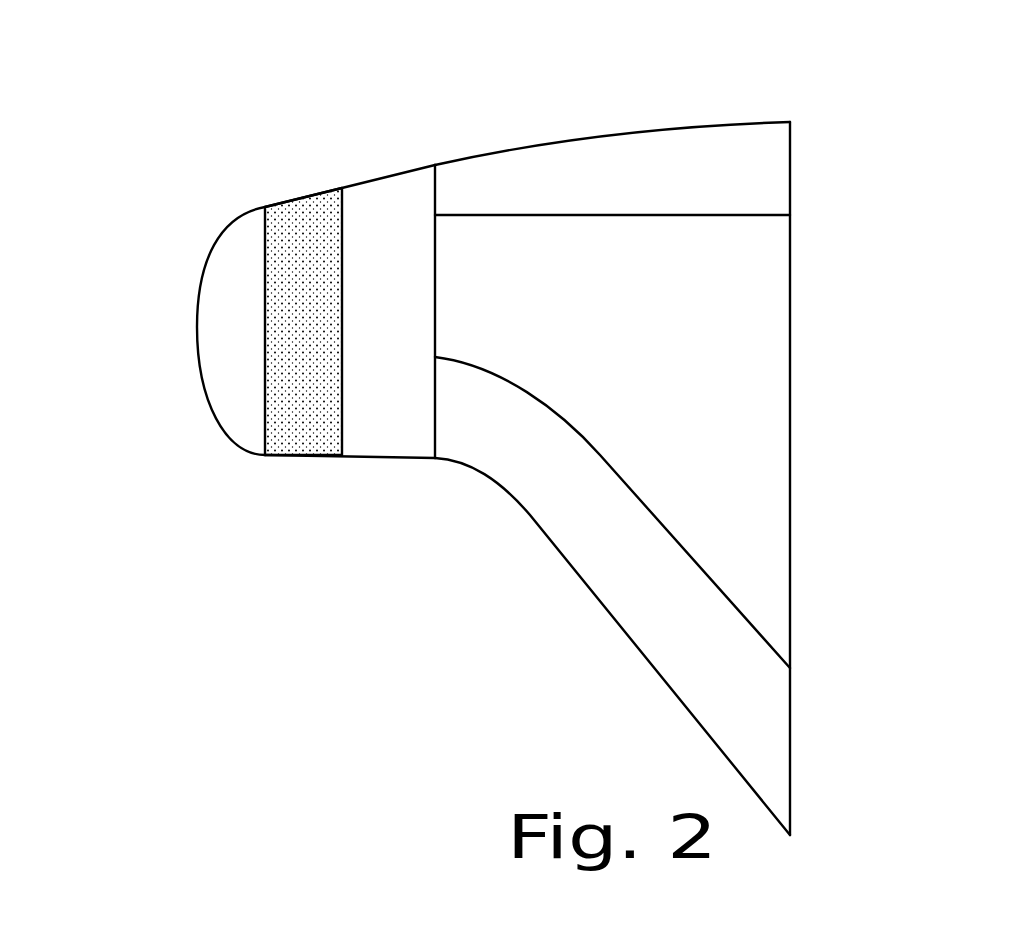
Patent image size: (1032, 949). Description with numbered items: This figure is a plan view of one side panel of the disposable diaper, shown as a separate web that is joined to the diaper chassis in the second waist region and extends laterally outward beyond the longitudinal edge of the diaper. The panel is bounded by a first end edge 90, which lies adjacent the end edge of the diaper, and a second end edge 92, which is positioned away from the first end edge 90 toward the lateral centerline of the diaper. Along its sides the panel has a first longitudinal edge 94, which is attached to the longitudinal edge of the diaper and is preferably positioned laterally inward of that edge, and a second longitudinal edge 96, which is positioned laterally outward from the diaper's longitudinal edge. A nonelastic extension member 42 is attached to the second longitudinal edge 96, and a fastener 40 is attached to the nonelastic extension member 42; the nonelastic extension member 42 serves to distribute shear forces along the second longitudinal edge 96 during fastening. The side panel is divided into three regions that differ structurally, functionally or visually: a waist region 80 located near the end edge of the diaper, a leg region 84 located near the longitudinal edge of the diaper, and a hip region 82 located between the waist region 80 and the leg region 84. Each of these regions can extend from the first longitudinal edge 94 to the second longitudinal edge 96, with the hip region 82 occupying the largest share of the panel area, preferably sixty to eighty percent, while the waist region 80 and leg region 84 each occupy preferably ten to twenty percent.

The fastener 40 is at (308, 245).
The nonelastic extension member 42 is at (195, 325).
The second longitudinal edge 96 is at (435, 310).
The first end edge 90 is at (518, 147).
The waist region 80 is at (703, 167).
The hip region 82 is at (665, 353).
The leg region 84 is at (582, 498).
The second end edge 92 is at (666, 677).
The first longitudinal edge 94 is at (790, 282).